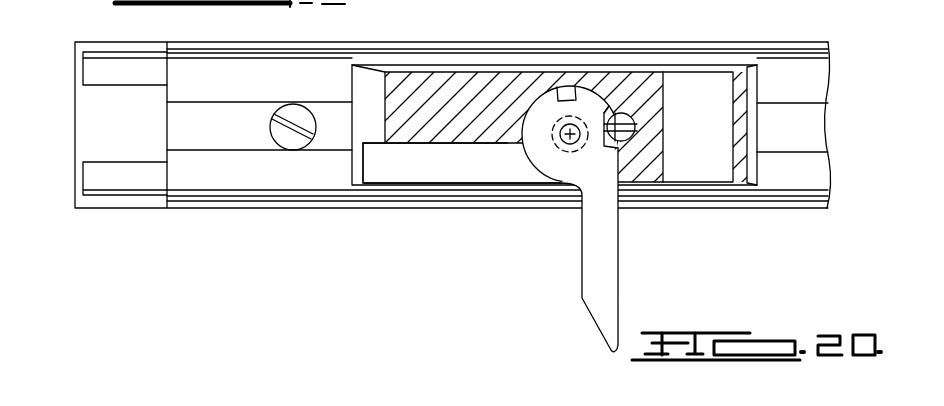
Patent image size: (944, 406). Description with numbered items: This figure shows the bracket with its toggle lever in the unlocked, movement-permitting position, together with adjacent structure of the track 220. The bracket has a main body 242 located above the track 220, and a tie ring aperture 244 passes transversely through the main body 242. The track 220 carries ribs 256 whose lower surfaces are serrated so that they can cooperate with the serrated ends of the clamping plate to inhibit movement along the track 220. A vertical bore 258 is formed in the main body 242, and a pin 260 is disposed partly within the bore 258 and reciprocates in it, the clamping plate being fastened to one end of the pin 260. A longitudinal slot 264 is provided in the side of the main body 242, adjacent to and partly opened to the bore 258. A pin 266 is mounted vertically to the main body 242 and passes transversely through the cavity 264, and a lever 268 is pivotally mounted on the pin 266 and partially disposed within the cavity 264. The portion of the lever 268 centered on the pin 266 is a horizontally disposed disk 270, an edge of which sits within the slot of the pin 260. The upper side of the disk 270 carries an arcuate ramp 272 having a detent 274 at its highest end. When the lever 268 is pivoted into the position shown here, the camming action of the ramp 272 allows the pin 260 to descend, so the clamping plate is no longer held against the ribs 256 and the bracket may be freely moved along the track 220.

The track 220 is at (233, 176).
The main body 242 is at (490, 104).
The tie ring aperture 244 is at (707, 80).
The ribs 256 is at (812, 90).
The vertical bore 258 is at (630, 132).
The pin 260 is at (633, 116).
The longitudinal slot 264 is at (420, 155).
The pin 266 is at (568, 138).
The lever 268 is at (598, 268).
The disk 270 is at (540, 110).
The arcuate ramp 272 is at (605, 108).
The detent 274 is at (570, 95).